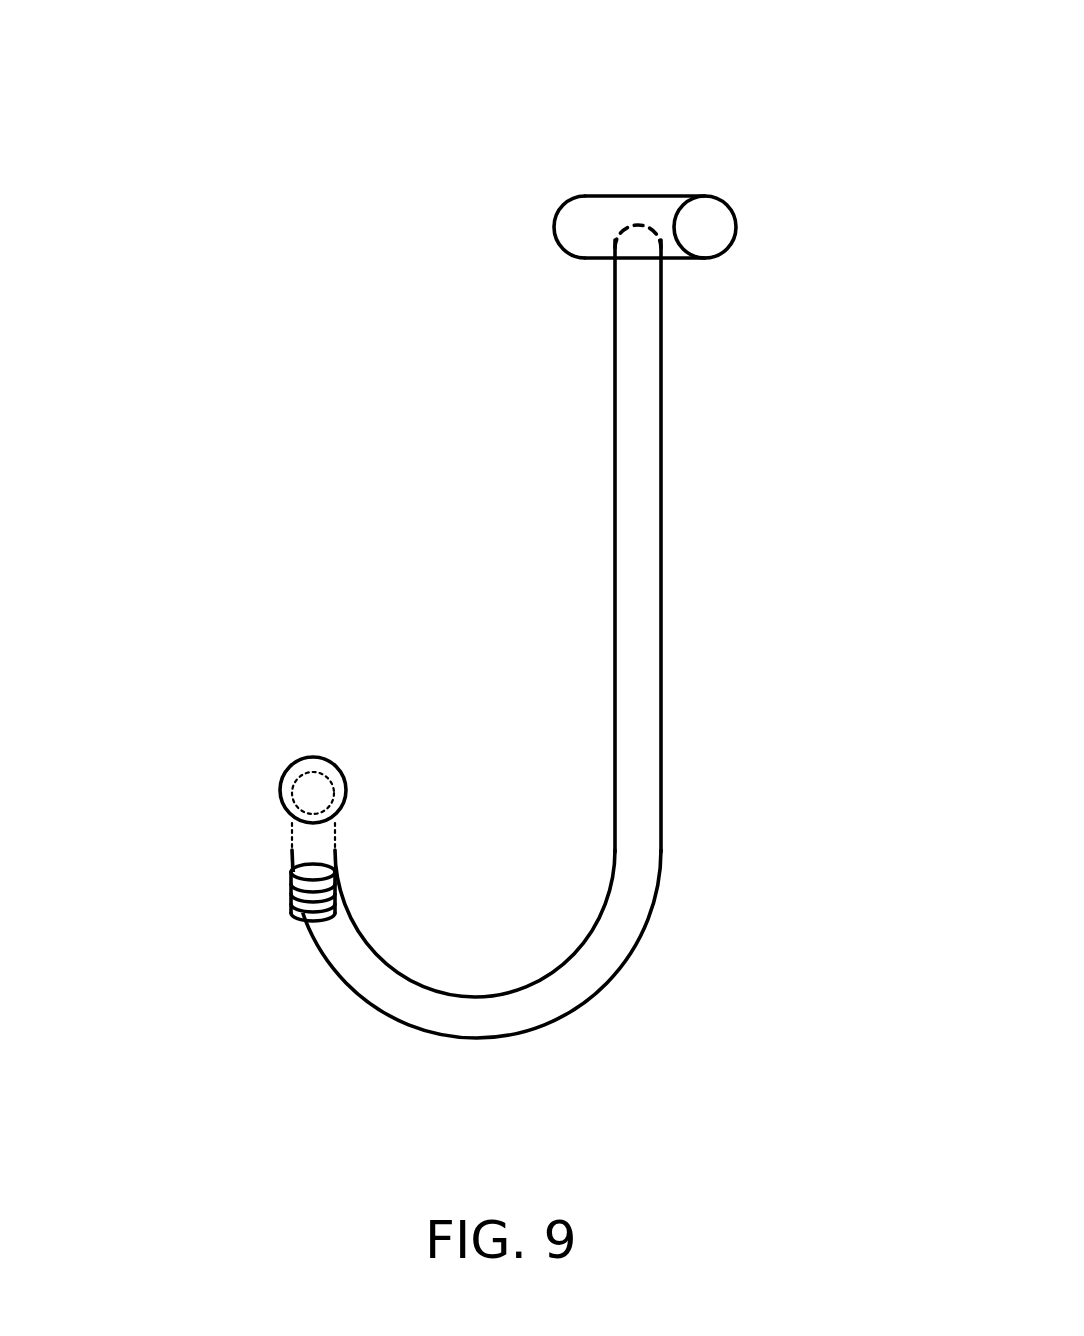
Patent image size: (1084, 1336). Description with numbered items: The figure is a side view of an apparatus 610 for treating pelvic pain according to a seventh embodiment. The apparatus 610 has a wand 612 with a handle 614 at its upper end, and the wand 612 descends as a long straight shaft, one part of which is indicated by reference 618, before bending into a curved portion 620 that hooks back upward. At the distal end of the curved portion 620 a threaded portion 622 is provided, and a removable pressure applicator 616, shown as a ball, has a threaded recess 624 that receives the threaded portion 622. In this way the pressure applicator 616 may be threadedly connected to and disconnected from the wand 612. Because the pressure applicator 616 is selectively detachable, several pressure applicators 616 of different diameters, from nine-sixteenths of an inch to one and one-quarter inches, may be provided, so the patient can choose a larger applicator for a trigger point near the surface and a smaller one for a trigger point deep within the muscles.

The apparatus 610 is at (418, 138).
The wand 612 is at (615, 551).
The handle 614 is at (737, 228).
The pressure applicator 616 is at (280, 787).
The upper shaft portion 618 is at (661, 352).
The curved portion 620 is at (600, 985).
The threaded portion 622 is at (290, 900).
The threaded recess 624 is at (335, 797).